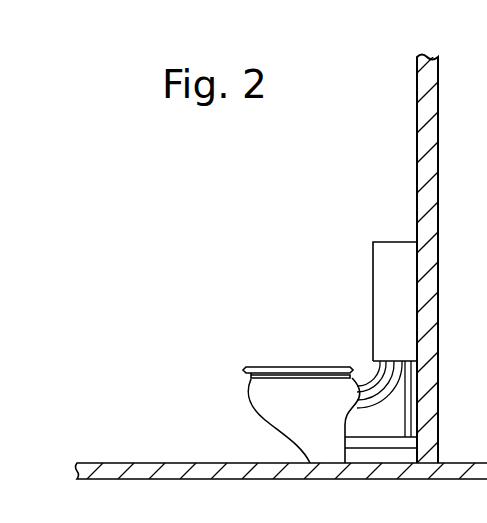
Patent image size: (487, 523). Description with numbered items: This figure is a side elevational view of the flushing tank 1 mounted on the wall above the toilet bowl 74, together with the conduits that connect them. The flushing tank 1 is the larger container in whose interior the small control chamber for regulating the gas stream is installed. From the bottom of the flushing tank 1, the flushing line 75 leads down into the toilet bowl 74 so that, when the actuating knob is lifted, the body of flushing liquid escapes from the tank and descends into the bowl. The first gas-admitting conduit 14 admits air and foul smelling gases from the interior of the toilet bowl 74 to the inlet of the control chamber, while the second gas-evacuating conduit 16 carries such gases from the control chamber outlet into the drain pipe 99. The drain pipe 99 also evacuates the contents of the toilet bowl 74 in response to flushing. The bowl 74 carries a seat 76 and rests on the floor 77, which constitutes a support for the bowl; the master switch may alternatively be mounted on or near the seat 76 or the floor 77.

The flushing tank 1 is at (382, 250).
The first gas-admitting conduit 14 is at (383, 395).
The second gas-evacuating conduit 16 is at (408, 422).
The toilet bowl 74 is at (265, 400).
The flushing line 75 is at (368, 382).
The seat 76 is at (282, 366).
The floor 77 is at (172, 472).
The drain pipe 99 is at (380, 443).